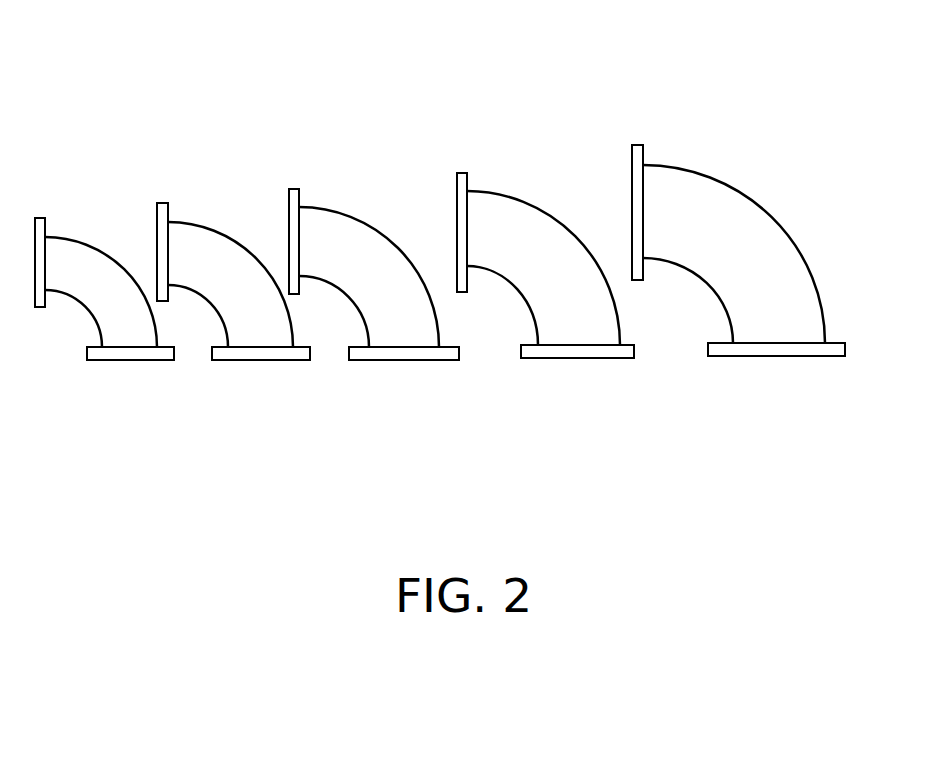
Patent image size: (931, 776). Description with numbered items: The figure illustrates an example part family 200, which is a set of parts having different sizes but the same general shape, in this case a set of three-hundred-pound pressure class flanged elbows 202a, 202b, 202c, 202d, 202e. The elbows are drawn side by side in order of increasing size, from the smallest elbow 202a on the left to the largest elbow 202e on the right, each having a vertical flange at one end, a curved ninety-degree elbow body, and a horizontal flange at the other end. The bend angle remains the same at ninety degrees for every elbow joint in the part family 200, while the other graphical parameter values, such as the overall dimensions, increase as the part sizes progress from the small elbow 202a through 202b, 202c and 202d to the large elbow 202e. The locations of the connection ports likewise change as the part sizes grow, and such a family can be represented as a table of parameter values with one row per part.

The part family 200 is at (177, 132).
The flanged elbow 202a is at (135, 360).
The flanged elbow 202b is at (292, 360).
The flanged elbow 202c is at (437, 360).
The flanged elbow 202d is at (593, 358).
The flanged elbow 202e is at (791, 356).